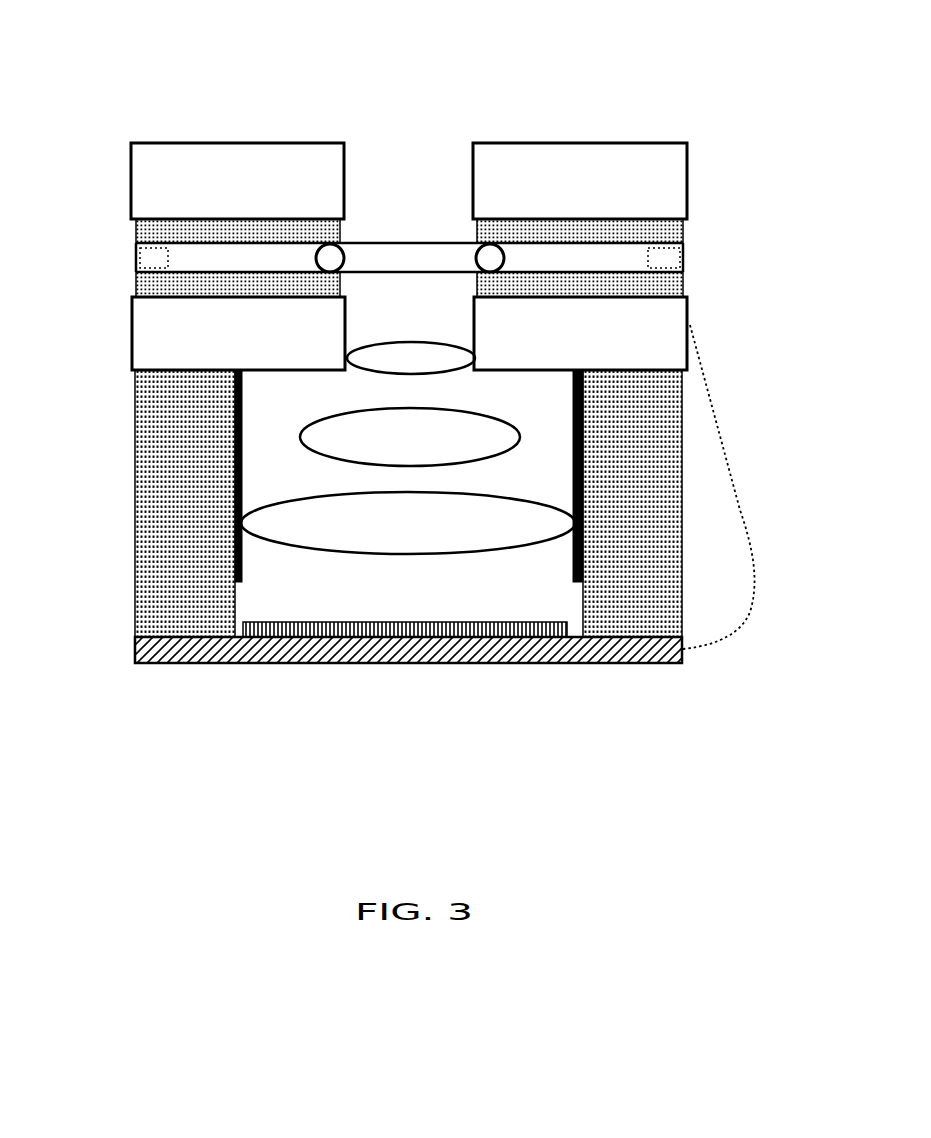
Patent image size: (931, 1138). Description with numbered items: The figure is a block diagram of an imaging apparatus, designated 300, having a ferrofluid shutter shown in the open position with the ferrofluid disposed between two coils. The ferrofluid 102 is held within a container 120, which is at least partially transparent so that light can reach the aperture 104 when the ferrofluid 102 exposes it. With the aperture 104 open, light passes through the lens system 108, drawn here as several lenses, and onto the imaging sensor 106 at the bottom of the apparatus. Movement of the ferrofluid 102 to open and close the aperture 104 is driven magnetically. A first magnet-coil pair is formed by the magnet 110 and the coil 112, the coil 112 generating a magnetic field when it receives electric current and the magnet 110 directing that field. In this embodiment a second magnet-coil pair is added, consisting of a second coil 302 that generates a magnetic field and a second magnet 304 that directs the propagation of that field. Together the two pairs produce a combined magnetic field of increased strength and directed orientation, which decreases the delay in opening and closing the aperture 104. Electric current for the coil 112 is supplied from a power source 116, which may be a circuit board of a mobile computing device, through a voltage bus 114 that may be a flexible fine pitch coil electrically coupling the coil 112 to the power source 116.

The optical sensing assembly 300 is at (440, 873).
The second coil 302 is at (685, 223).
The second magnet 304 is at (570, 143).
The ferrofluid 102 is at (481, 247).
The aperture 104 is at (441, 321).
The imaging sensor 106 is at (318, 663).
The lens system 108 is at (362, 371).
The magnet 110 is at (131, 324).
The coil 112 is at (696, 287).
The voltage bus 114 is at (740, 512).
The power source 116 is at (170, 663).
The container 120 is at (685, 250).